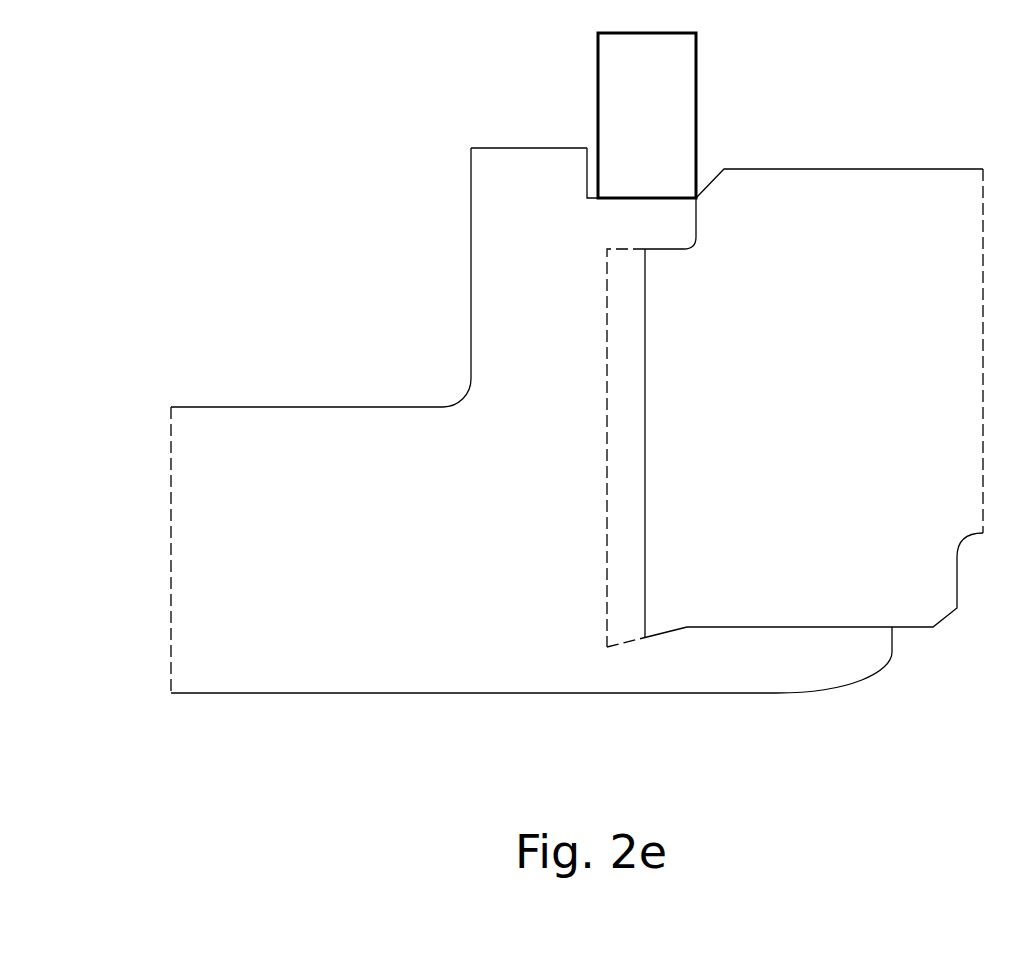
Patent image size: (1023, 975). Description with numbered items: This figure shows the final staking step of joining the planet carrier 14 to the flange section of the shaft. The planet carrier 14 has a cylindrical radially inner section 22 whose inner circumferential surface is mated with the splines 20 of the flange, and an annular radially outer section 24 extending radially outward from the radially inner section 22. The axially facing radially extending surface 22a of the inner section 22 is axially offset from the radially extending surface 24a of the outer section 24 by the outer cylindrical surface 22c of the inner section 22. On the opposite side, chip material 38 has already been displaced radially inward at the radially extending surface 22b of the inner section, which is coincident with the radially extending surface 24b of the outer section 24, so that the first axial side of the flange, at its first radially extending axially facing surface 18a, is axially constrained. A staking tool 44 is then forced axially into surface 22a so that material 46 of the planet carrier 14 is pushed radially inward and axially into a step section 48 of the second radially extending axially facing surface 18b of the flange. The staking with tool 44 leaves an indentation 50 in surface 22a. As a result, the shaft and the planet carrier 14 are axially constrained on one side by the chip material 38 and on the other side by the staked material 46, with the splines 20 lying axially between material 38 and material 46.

The planet carrier 14 is at (250, 180).
The first radially extending axially facing surface 18a is at (838, 627).
The second radially extending axially facing surface 18b is at (820, 169).
The splines 20 is at (622, 488).
The radially inner section 22 is at (479, 216).
The axially facing radially extending surface 22a is at (530, 148).
The radially extending surface 22b is at (508, 693).
The outer cylindrical surface 22c is at (470, 207).
The annular radially outer section 24 is at (531, 551).
The radially extending surface 24a is at (337, 407).
The radially extending surface 24b is at (250, 693).
The chip material 38 is at (733, 643).
The staking tool 44 is at (676, 102).
The material 46 is at (682, 222).
The step section 48 is at (700, 255).
The indentation 50 is at (588, 210).